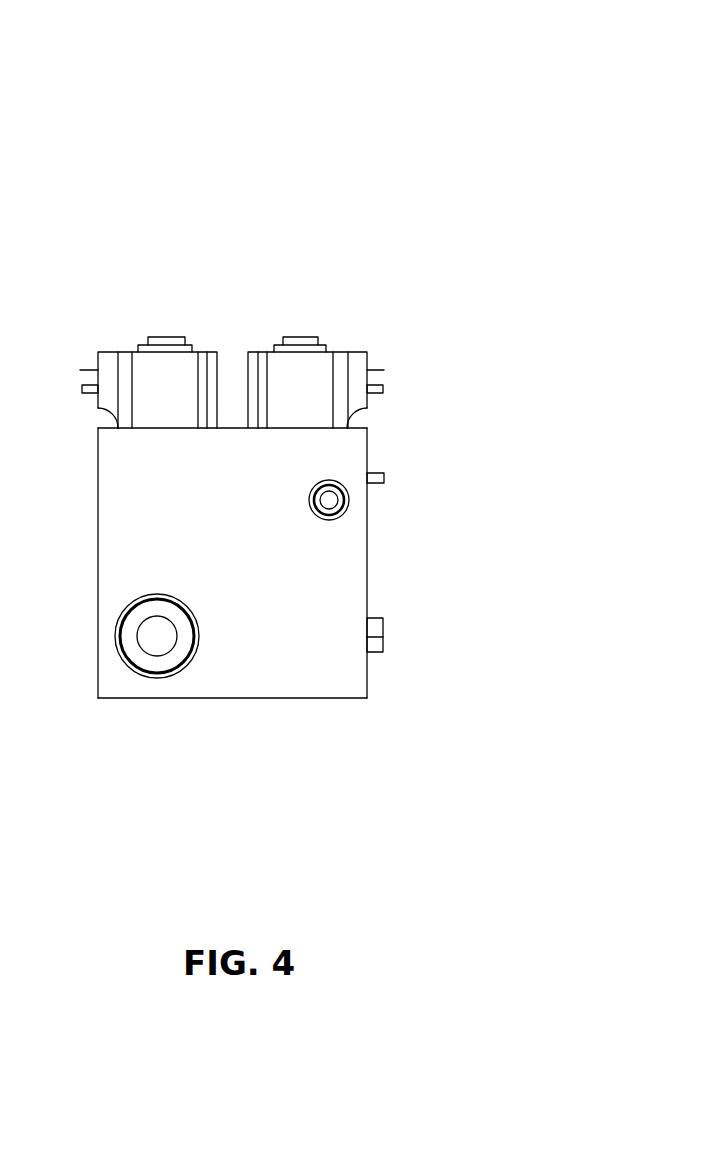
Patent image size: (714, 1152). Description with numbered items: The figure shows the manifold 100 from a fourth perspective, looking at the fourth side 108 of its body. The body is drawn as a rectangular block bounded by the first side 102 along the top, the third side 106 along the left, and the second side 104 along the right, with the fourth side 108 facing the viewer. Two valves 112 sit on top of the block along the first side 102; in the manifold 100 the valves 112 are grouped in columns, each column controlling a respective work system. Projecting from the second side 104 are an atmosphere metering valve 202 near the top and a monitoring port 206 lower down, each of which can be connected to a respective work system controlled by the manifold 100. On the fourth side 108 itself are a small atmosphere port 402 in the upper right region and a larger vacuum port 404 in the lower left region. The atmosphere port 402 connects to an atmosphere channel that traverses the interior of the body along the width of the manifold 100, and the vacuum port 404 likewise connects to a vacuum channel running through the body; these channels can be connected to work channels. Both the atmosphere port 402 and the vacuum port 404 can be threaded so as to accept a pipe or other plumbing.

The manifold 100 is at (148, 80).
The first side 102 is at (232, 426).
The second side 104 is at (372, 558).
The third side 106 is at (99, 557).
The fourth side 108 is at (300, 653).
The valves 112 is at (120, 332).
The atmosphere metering valve 202 is at (392, 474).
The monitoring port 206 is at (394, 632).
The atmosphere port 402 is at (352, 502).
The vacuum port 404 is at (135, 673).